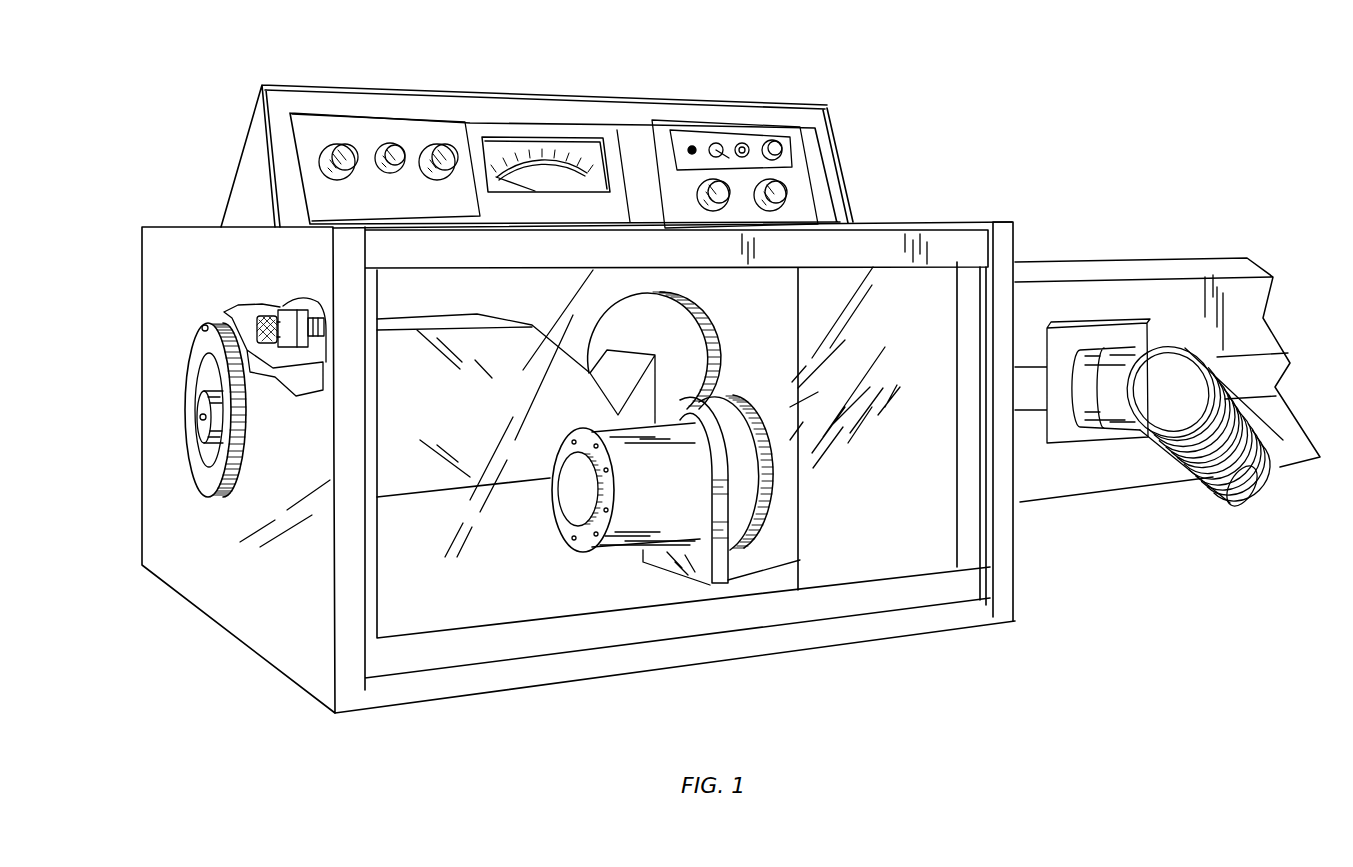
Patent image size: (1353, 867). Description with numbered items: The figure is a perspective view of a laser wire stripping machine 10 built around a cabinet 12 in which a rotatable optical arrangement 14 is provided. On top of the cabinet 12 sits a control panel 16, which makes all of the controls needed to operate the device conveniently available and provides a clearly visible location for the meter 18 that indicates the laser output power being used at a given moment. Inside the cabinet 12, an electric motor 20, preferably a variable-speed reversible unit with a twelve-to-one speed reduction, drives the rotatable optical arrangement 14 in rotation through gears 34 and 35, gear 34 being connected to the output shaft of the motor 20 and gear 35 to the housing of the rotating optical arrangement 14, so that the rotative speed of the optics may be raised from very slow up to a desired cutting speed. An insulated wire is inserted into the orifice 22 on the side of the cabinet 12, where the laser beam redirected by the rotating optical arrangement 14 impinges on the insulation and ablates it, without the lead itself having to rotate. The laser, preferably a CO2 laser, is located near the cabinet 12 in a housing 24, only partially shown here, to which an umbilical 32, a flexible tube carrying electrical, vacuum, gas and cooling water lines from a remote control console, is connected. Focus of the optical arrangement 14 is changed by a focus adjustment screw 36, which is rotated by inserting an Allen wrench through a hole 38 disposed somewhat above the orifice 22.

The laser wire stripping machine 10 is at (958, 162).
The cabinet 12 is at (257, 635).
The rotatable optical arrangement 14 is at (408, 482).
The control panel 16 is at (430, 103).
The meter 18 is at (535, 150).
The electric motor 20 is at (632, 537).
The orifice 22 is at (200, 418).
The housing 24 is at (1135, 270).
The umbilical 32 is at (1222, 480).
The gear 34 is at (747, 524).
The gear 35 is at (670, 360).
The focus adjustment screw 36 is at (299, 310).
The hole 38 is at (190, 350).